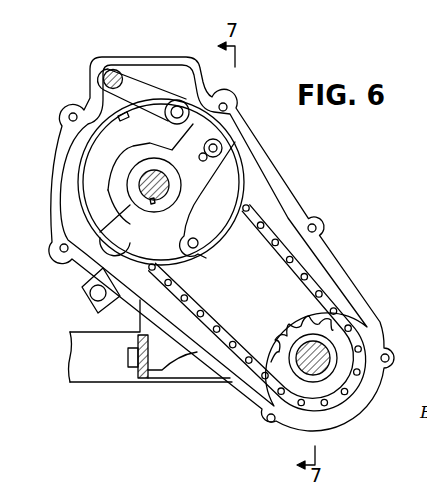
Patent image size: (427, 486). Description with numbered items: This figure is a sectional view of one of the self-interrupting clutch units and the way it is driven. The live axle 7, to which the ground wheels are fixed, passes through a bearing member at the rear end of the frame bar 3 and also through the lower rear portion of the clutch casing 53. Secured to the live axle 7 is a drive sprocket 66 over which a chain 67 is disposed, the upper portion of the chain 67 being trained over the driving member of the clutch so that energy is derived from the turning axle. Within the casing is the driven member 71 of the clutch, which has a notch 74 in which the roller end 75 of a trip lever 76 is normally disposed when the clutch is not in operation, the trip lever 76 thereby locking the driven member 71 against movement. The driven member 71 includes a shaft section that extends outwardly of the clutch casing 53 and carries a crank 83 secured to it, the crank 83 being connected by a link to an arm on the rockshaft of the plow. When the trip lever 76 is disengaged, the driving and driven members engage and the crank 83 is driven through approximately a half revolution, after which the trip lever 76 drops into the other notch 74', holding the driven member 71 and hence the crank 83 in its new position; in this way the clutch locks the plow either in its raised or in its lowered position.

The frame bar 3 is at (95, 380).
The live axle 7 is at (328, 354).
The clutch casing 53 is at (291, 206).
The drive sprocket 66 is at (282, 325).
The chain 67 is at (303, 272).
The driven member 71 is at (92, 163).
The notch 74 is at (142, 106).
The notch 74' is at (133, 242).
The roller end 75 is at (189, 108).
The trip lever 76 is at (125, 83).
The crank 83 is at (83, 292).